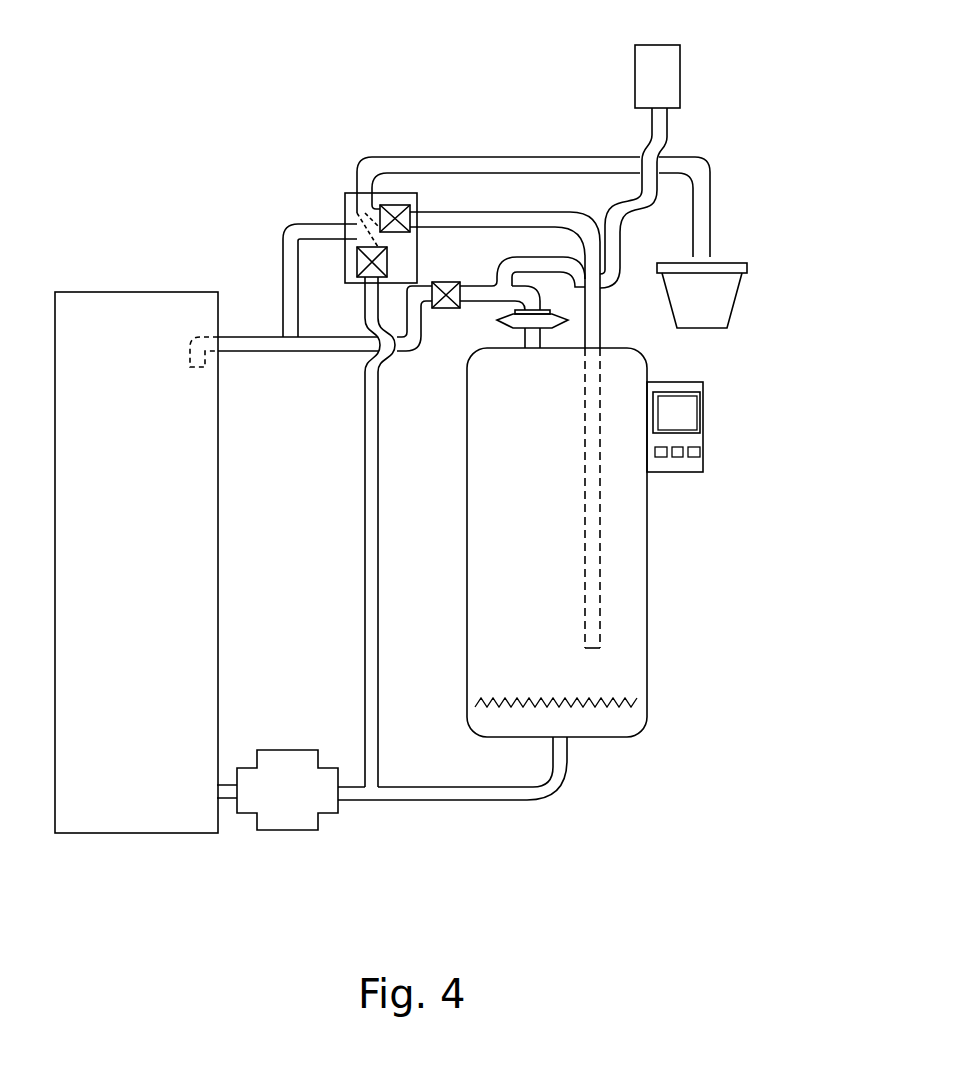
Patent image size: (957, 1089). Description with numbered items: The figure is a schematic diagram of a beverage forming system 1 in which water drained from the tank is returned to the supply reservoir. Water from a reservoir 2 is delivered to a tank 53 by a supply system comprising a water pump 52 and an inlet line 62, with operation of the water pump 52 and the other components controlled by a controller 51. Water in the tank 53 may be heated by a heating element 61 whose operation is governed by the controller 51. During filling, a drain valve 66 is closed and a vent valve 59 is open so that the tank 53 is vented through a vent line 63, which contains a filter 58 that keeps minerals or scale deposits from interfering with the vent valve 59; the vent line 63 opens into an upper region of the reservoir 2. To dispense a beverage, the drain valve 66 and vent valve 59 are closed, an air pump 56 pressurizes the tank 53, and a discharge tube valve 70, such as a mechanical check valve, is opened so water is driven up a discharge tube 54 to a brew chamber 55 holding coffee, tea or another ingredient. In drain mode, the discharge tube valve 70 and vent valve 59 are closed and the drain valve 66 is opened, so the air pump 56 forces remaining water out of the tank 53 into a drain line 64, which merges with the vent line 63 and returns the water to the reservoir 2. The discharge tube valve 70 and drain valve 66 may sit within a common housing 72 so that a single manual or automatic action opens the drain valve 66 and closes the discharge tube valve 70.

The beverage forming system 1 is at (280, 86).
The reservoir 2 is at (105, 833).
The controller 51 is at (703, 395).
The water pump 52 is at (278, 822).
The tank 53 is at (641, 527).
The discharge tube 54 is at (510, 215).
The brew chamber 55 is at (738, 290).
The air pump 56 is at (680, 80).
The filter 58 is at (497, 320).
The vent valve 59 is at (443, 280).
The heating element 61 is at (612, 697).
The inlet line 62 is at (518, 800).
The vent line 63 is at (310, 352).
The drain line 64 is at (365, 565).
The drain valve 66 is at (357, 263).
The discharge tube valve 70 is at (398, 207).
The common housing 72 is at (343, 208).